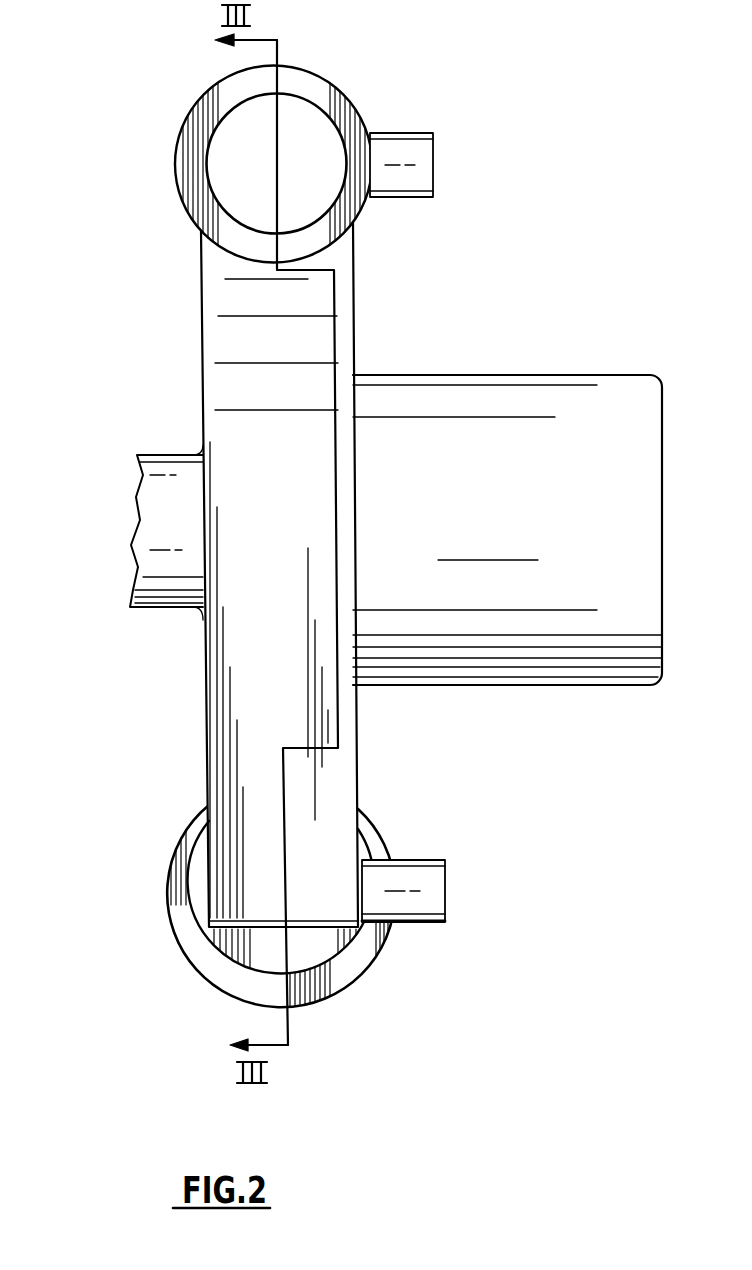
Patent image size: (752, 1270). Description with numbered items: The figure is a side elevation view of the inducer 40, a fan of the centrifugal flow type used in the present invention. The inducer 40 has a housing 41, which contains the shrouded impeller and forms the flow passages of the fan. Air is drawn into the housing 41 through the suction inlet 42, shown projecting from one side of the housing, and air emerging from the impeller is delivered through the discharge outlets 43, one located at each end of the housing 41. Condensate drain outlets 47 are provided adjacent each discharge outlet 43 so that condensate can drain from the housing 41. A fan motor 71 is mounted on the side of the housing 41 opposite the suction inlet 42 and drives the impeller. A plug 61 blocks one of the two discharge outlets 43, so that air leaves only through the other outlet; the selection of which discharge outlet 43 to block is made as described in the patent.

The inducer 40 is at (353, 544).
The housing 41 is at (205, 730).
The suction inlet 42 is at (140, 530).
The discharge outlets 43 is at (217, 180).
The condensate drain outlets 47 is at (390, 133).
The plug 61 is at (380, 963).
The fan motor 71 is at (423, 375).